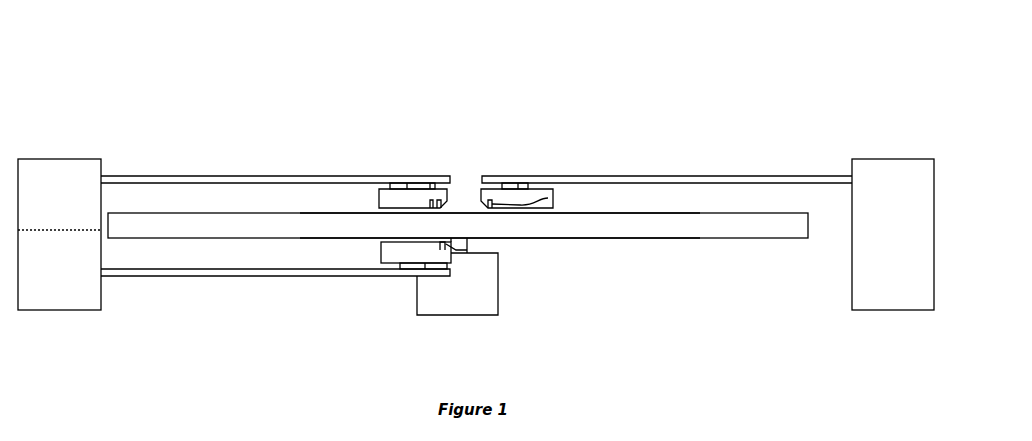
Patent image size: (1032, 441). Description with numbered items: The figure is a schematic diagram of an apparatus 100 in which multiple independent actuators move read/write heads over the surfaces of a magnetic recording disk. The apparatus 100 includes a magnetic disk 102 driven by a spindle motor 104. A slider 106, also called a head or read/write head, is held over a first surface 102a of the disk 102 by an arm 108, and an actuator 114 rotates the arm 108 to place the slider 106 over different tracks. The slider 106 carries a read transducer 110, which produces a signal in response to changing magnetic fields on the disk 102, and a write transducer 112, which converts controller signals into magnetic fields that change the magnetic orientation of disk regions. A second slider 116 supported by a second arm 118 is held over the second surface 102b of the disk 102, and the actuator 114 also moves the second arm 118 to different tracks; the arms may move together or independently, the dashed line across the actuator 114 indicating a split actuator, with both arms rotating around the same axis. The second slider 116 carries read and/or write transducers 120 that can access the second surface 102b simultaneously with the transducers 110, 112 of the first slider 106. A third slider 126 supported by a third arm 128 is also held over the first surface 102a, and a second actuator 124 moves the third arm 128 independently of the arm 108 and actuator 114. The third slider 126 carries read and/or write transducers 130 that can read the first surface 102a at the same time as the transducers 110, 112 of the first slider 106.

The apparatus 100 is at (618, 80).
The magnetic disk 102 is at (763, 232).
The first surface 102a is at (650, 213).
The second surface 102b is at (679, 238).
The spindle motor 104 is at (432, 315).
The slider 106 is at (393, 197).
The arm 108 is at (252, 176).
The read transducer 110 is at (438, 205).
The write transducer 112 is at (431, 205).
The actuator 114 is at (50, 159).
The second slider 116 is at (393, 263).
The second arm 118 is at (237, 276).
The read and/or write transducers 120 is at (467, 250).
The second actuator 124 is at (883, 159).
The third slider 126 is at (518, 194).
The third arm 128 is at (681, 176).
The read and/or write transducers 130 is at (548, 198).